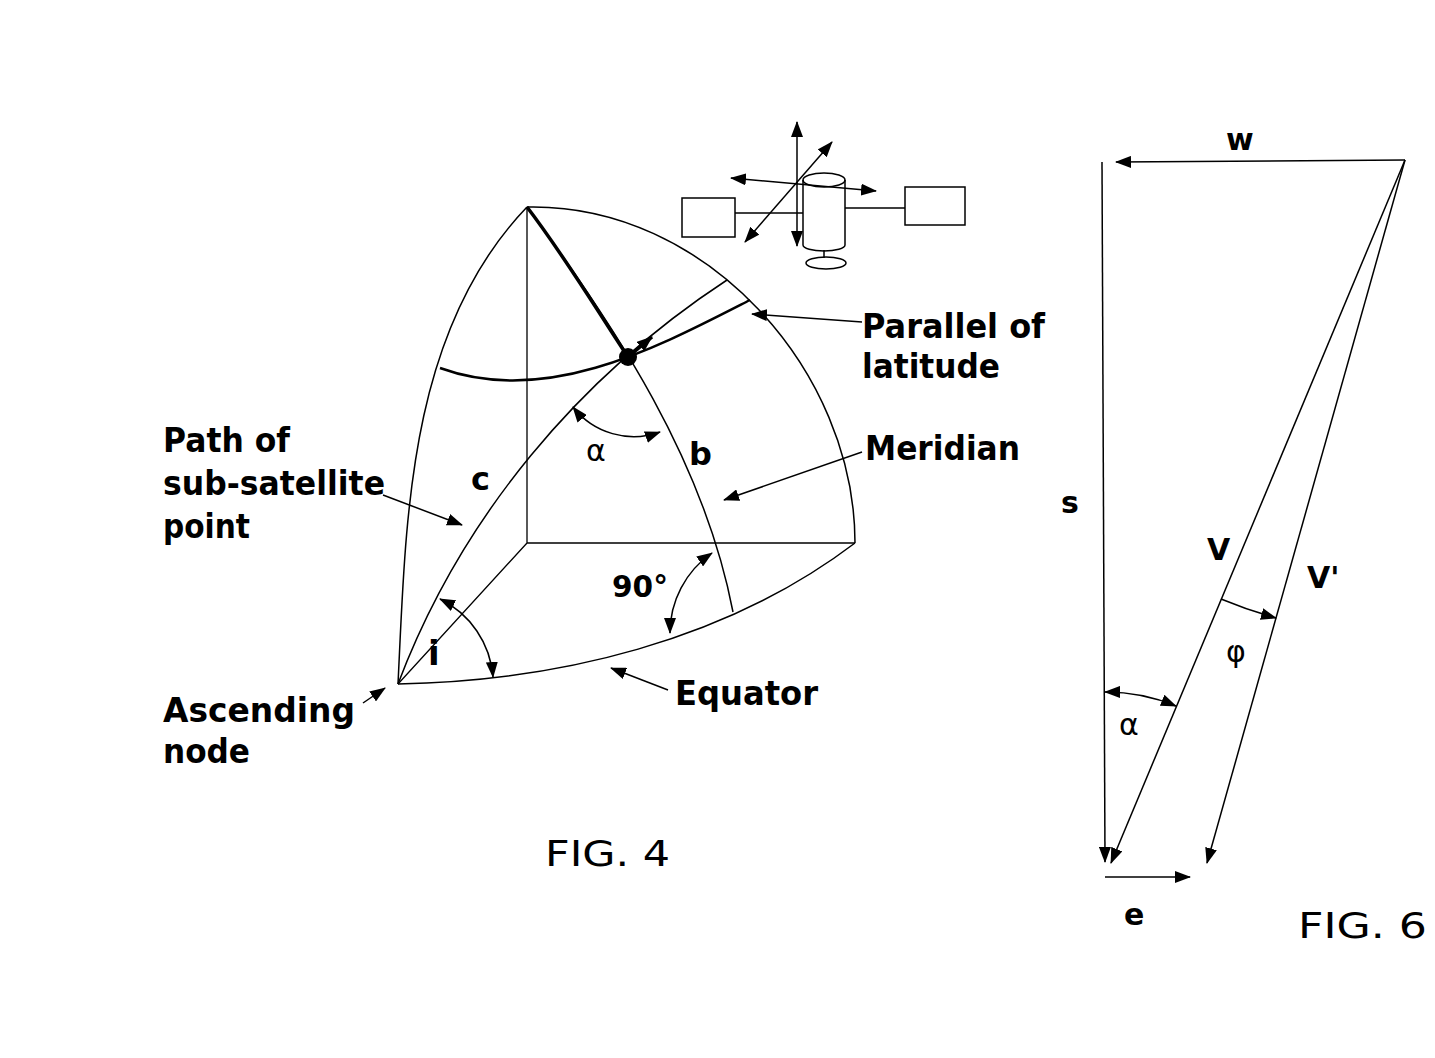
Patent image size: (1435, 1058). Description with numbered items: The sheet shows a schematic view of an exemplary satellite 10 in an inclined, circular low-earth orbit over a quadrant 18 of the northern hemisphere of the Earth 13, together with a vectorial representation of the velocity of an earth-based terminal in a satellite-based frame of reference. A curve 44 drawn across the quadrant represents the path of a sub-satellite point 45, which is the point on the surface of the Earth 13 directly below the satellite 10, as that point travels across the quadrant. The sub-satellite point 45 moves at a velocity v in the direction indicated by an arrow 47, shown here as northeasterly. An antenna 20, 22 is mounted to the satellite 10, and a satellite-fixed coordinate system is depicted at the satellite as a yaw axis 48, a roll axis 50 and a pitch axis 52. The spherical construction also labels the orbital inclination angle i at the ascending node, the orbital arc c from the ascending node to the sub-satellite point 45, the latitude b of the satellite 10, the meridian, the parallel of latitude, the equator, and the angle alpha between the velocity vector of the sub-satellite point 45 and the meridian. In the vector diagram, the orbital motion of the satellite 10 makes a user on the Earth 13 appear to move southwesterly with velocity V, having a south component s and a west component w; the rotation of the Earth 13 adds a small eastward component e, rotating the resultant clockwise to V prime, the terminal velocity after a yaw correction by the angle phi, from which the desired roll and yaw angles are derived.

The satellite 10 is at (824, 213).
The Earth 13 is at (581, 444).
The quadrant 18 is at (476, 275).
The antenna 20 is at (886, 259).
The antenna 22 is at (847, 262).
The curve 44 is at (511, 472).
The sub-satellite point 45 is at (617, 354).
The arrow 47 is at (622, 346).
The yaw axis 48 is at (798, 226).
The roll axis 50 is at (797, 163).
The pitch axis 52 is at (856, 186).